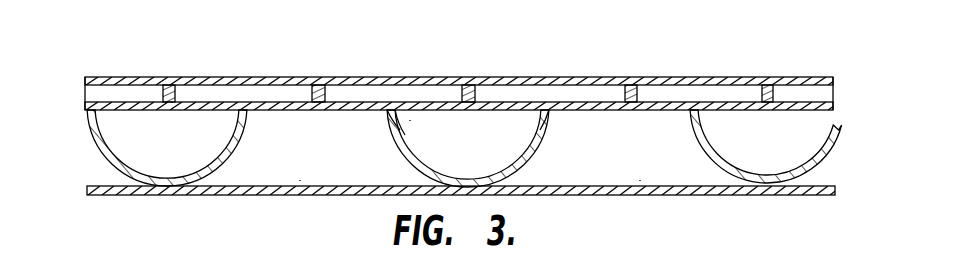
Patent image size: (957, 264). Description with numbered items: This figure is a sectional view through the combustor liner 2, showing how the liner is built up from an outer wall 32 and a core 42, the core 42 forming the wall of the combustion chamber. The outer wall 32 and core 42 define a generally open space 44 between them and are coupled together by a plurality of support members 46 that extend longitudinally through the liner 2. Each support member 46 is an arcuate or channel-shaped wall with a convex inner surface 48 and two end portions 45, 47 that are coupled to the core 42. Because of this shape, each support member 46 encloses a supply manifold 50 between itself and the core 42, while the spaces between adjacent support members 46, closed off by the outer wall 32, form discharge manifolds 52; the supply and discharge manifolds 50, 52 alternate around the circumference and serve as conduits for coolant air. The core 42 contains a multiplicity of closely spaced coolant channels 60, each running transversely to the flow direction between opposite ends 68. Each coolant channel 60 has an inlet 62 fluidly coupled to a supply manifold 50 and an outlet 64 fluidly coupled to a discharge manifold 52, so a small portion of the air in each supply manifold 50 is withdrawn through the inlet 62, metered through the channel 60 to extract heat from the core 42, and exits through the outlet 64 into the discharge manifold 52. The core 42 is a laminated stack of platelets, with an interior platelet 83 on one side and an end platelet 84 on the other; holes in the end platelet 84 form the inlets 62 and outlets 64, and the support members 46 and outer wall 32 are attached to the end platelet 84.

The combustor liner 2 is at (72, 230).
The outer wall 32 is at (236, 196).
The core 42 is at (464, 96).
The open space 44 is at (664, 165).
The end portion 45 is at (534, 108).
The support member 46 is at (552, 133).
The end portion 47 is at (390, 112).
The convex inner surface 48 is at (452, 143).
The supply manifold 50 is at (489, 163).
The discharge manifold 52 is at (332, 171).
The coolant channel 60 is at (212, 86).
The inlet 62 is at (187, 107).
The outlet 64 is at (302, 108).
The end 68 is at (471, 104).
The interior platelet 83 is at (847, 117).
The end platelet 84 is at (87, 110).